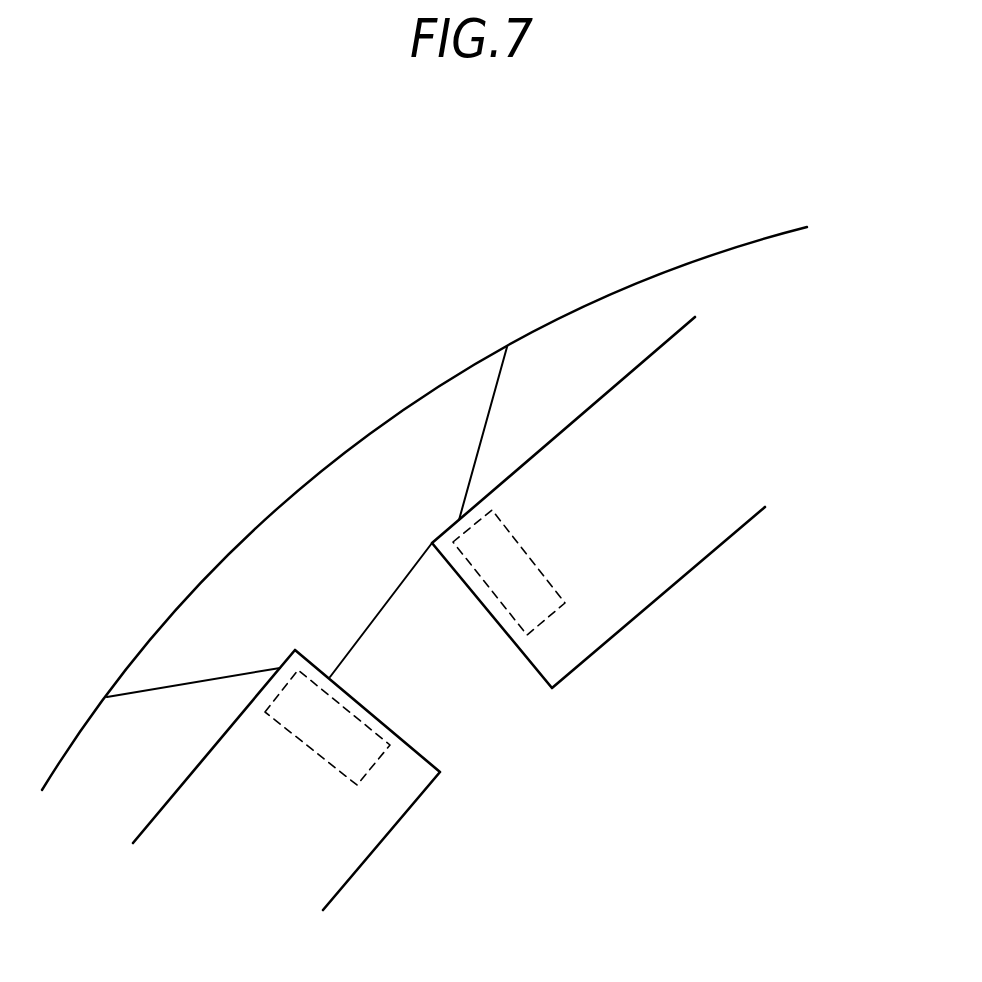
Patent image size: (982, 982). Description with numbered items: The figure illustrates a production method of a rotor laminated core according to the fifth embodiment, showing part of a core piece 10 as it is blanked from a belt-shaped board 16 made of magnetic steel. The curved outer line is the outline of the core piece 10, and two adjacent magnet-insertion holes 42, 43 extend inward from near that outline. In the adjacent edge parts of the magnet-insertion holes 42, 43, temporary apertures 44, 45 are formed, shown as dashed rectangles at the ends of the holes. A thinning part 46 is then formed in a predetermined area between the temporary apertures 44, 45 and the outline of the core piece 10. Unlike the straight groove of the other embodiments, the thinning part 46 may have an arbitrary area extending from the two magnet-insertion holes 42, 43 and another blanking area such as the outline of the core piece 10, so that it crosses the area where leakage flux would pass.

The core piece 10 is at (570, 357).
The belt-shaped board 16 is at (432, 350).
The magnet-insertion hole 42 is at (343, 853).
The magnet-insertion hole 43 is at (702, 500).
The temporary aperture 44 is at (340, 733).
The temporary aperture 45 is at (527, 590).
The thinning part 46 is at (318, 522).